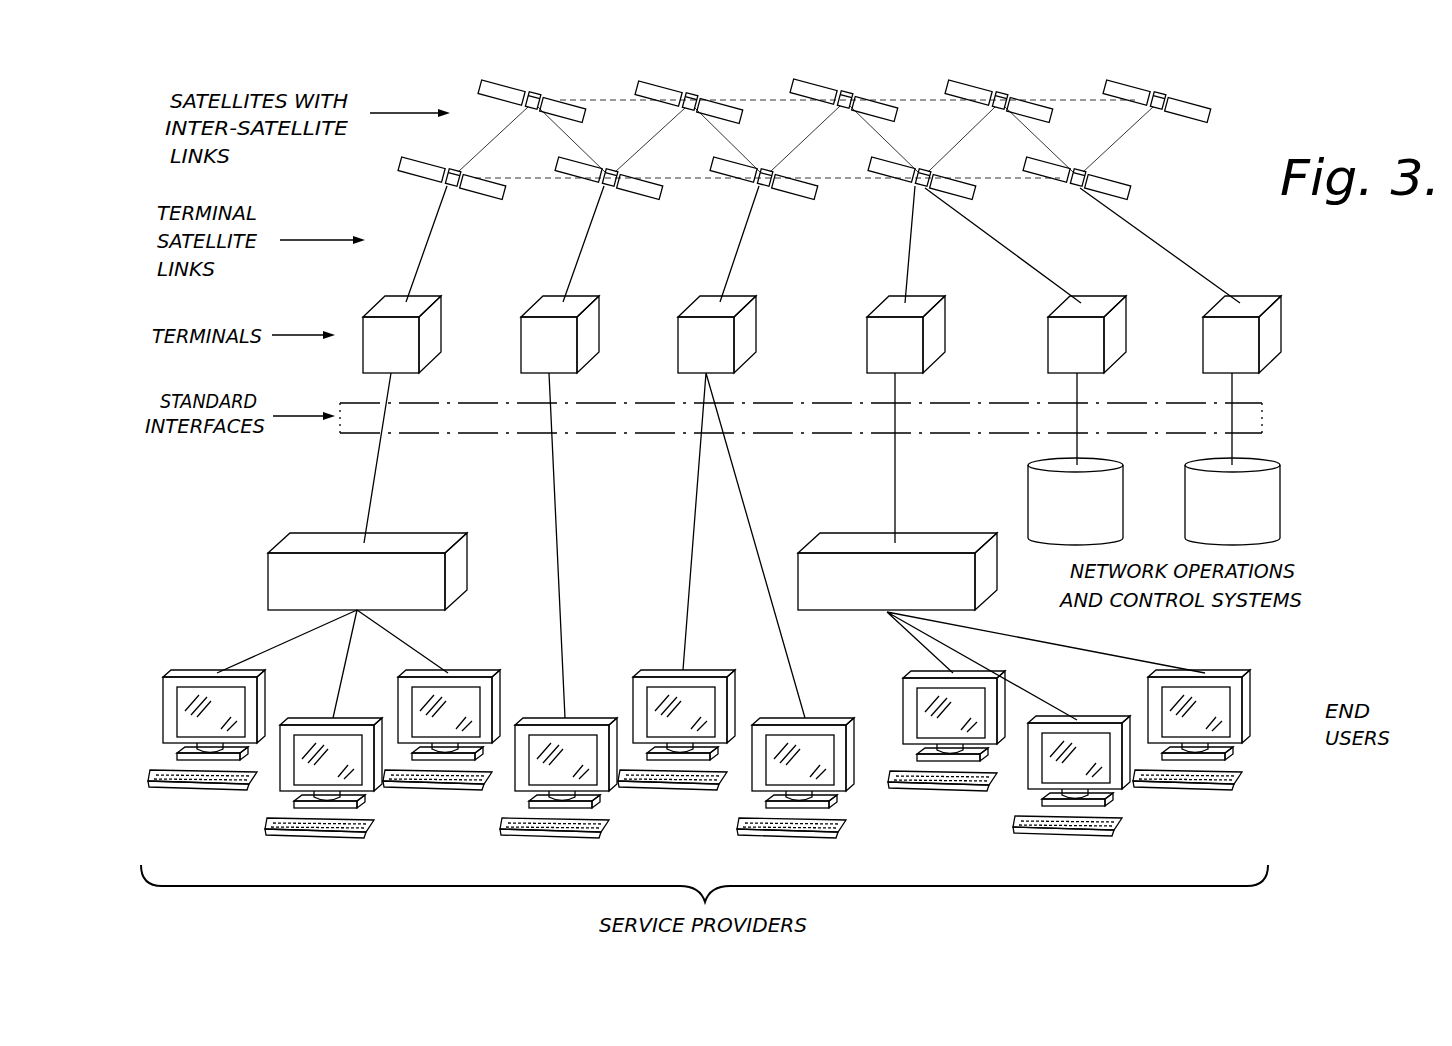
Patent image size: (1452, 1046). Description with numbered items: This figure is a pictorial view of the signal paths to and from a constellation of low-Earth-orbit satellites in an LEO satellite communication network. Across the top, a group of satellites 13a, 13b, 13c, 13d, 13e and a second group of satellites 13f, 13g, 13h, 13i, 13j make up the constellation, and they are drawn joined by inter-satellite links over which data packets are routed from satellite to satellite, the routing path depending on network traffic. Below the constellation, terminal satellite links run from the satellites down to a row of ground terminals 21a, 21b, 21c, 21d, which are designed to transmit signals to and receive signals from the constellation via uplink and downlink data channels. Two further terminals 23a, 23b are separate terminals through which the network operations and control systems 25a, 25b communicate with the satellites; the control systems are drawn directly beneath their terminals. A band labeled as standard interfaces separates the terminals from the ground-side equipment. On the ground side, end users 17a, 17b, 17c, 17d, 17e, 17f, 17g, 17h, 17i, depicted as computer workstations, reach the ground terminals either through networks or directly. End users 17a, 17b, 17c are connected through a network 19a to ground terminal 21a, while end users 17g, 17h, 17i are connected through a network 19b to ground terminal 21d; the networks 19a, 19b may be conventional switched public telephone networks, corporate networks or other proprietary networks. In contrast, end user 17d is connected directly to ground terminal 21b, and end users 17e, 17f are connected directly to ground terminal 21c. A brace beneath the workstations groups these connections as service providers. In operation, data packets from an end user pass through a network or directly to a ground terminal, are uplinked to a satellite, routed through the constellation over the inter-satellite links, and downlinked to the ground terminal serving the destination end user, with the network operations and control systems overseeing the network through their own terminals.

The satellite 13a is at (536, 110).
The satellite 13b is at (693, 111).
The satellite 13c is at (848, 109).
The satellite 13d is at (1003, 110).
The satellite 13e is at (1161, 110).
The satellite 13f is at (458, 188).
The satellite 13g is at (618, 190).
The satellite 13h is at (772, 190).
The satellite 13i is at (974, 192).
The satellite 13j is at (1128, 194).
The ground terminal 21a is at (380, 302).
The ground terminal 21b is at (536, 302).
The ground terminal 21c is at (694, 302).
The ground terminal 21d is at (880, 302).
The terminal 23a is at (1122, 318).
The terminal 23b is at (1272, 335).
The network operations and control system 25a is at (1022, 497).
The network operations and control system 25b is at (1272, 500).
The network 19a is at (420, 540).
The network 19b is at (820, 540).
The end user 17a is at (208, 670).
The end user 17b is at (302, 717).
The end user 17c is at (474, 671).
The end user 17d is at (596, 717).
The end user 17e is at (722, 671).
The end user 17f is at (846, 718).
The end user 17g is at (912, 672).
The end user 17h is at (1092, 717).
The end user 17i is at (1234, 672).